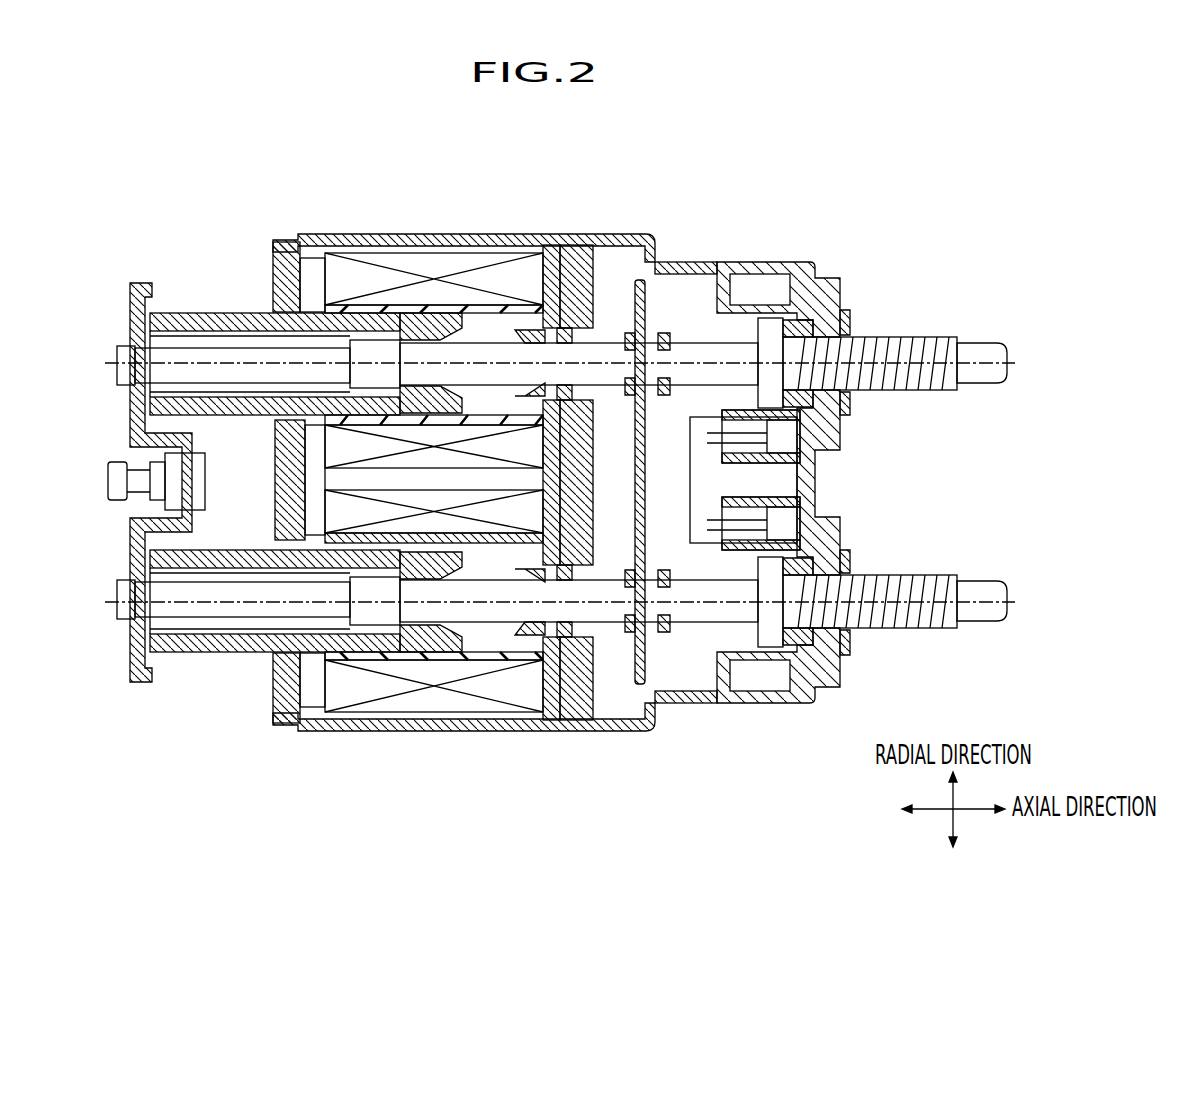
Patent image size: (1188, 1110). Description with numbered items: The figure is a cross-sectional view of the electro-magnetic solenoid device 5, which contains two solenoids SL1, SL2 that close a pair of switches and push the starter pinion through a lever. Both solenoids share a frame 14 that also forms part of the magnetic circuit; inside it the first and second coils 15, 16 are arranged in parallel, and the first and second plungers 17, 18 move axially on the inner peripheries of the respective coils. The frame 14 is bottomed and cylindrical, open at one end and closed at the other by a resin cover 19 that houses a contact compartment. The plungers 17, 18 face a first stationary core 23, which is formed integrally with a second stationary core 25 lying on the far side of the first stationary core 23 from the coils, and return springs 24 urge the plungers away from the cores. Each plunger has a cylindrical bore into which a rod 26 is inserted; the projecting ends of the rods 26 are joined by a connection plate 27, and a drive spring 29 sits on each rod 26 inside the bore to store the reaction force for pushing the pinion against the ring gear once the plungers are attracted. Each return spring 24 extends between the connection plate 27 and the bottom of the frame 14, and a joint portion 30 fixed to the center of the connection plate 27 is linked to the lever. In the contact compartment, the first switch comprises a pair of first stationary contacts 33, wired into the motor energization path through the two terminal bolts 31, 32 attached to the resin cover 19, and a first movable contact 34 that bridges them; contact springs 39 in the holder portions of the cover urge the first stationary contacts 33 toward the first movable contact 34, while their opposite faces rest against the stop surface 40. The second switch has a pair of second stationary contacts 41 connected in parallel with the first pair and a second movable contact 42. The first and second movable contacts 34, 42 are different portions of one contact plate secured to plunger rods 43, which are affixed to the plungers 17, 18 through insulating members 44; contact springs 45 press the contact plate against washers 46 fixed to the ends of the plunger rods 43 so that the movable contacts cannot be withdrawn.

The electro-magnetic solenoid device 5 is at (797, 189).
The frame 14 is at (500, 236).
The first coil 15 is at (393, 262).
The second coil 16 is at (400, 690).
The first plunger 17 is at (442, 330).
The second plunger 18 is at (447, 628).
The resin cover 19 is at (797, 263).
The first stationary core 23 is at (553, 320).
The return spring 24 is at (270, 300).
The second stationary core 25 is at (582, 290).
The rod 26 is at (185, 357).
The connection plate 27 is at (128, 557).
The drive spring 29 is at (155, 318).
The joint portion 30 is at (130, 482).
The B-terminal bolt 31 is at (920, 352).
The M-terminal bolt 32 is at (917, 612).
The first stationary contact 33 is at (710, 437).
The first movable contact 34 is at (700, 490).
The contact spring 39 is at (790, 420).
The stop surface 40 is at (770, 650).
The second stationary contact 41 is at (668, 322).
The second movable contact 42 is at (641, 282).
The plunger rod 43 is at (478, 352).
The insulating member 44 is at (664, 333).
The contact spring 45 is at (568, 328).
The washer 46 is at (700, 264).
The first solenoid SL1 is at (323, 233).
The second solenoid SL2 is at (345, 733).